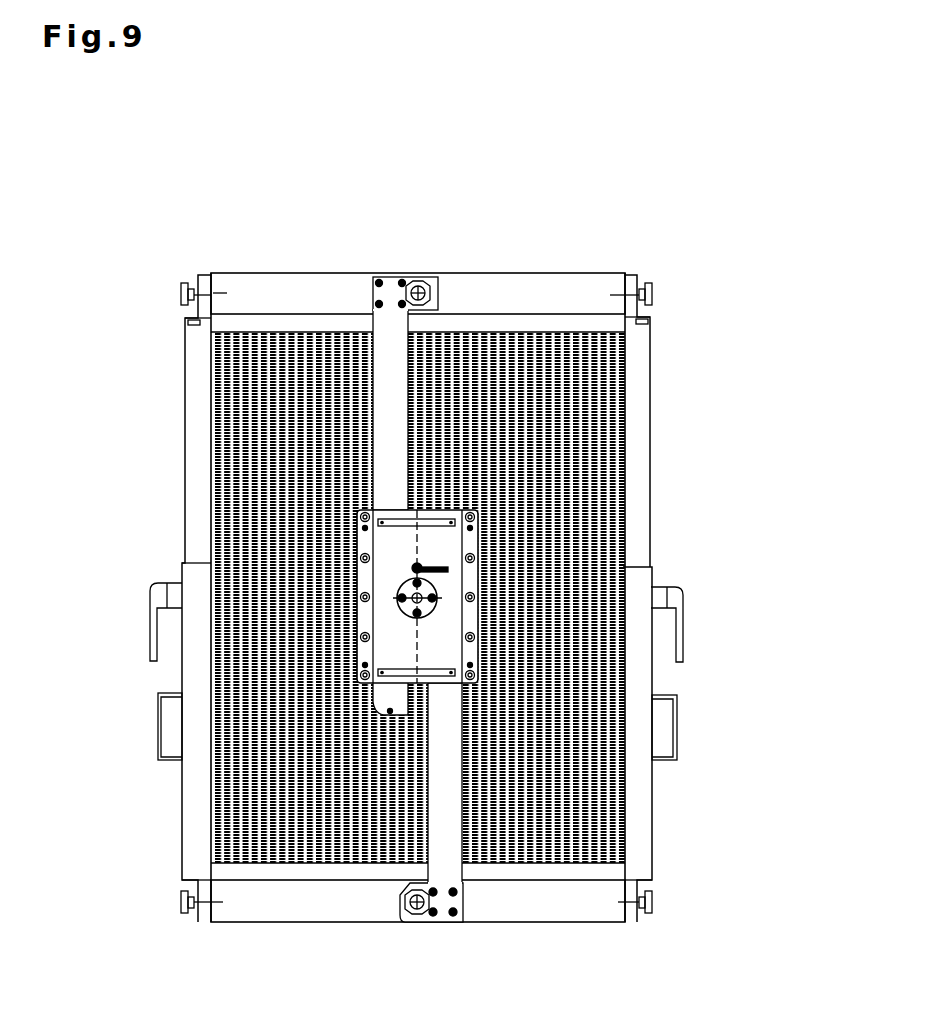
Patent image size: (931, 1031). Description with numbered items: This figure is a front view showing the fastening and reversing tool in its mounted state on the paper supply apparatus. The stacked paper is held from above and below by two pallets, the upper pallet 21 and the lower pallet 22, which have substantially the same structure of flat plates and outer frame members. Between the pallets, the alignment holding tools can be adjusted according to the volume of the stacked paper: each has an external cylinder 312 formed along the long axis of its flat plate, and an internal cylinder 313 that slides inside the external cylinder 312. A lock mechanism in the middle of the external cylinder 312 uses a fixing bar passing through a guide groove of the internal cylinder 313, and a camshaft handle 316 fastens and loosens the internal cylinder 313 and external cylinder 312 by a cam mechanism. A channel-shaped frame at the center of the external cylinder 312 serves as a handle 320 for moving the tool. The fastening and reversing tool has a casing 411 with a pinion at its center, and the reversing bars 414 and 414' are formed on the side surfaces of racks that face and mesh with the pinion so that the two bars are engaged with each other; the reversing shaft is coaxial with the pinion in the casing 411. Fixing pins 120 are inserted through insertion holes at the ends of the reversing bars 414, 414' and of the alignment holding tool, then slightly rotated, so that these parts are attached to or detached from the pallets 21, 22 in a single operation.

The upper pallet 21 is at (560, 292).
The lower pallet 22 is at (578, 912).
The fixing pin 120 is at (433, 287).
The internal cylinder 313 is at (640, 397).
The external cylinder 312 is at (645, 868).
The camshaft handle 316 is at (682, 615).
The handle 320 is at (675, 728).
The casing 411 is at (470, 537).
The reversing bar 414 is at (335, 326).
The reversing bar 414' is at (601, 802).